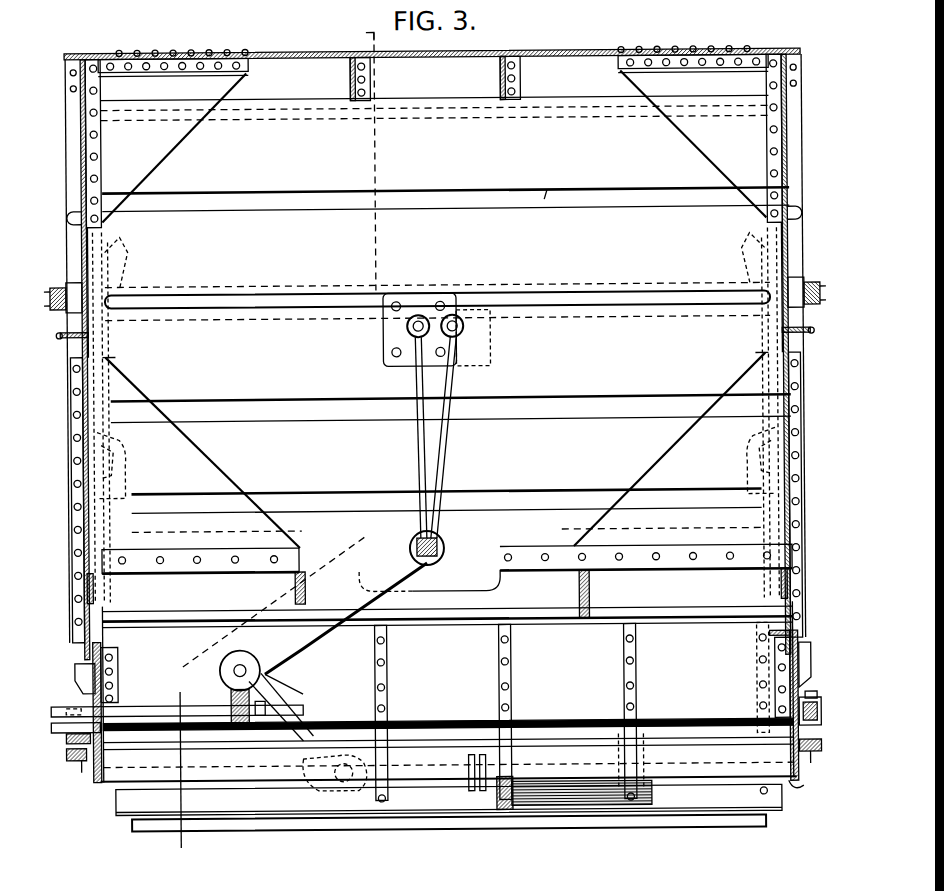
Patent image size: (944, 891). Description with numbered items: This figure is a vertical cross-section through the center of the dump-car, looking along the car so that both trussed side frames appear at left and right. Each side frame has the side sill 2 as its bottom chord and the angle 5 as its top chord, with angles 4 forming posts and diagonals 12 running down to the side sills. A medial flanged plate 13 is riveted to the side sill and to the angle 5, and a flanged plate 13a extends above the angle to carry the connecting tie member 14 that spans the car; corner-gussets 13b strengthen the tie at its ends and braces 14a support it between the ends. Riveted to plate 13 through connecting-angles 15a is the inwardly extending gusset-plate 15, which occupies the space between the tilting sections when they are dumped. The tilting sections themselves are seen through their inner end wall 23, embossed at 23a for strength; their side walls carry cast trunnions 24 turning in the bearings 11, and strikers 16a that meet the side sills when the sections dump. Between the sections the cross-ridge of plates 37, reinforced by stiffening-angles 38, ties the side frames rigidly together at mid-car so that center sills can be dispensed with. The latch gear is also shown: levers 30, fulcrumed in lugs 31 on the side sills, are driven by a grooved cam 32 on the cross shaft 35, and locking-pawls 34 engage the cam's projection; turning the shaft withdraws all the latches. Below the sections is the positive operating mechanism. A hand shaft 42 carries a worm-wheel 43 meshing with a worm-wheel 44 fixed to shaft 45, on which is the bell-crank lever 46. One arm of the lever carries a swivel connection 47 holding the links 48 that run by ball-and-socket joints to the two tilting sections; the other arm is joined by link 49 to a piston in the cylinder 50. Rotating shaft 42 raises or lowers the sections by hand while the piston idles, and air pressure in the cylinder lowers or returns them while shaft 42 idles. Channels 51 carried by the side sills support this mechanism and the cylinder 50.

The side sill 2 is at (86, 782).
The angle 4 is at (273, 447).
The angle 5 is at (64, 333).
The bearing 11 is at (86, 283).
The diagonal 12 is at (80, 672).
The medial flanged plate 13 is at (86, 584).
The flanged plate 13a is at (808, 132).
The corner-gusset 13b is at (433, 133).
The connecting tie member 14 is at (562, 51).
The brace 14a is at (372, 80).
The gusset-plate 15 is at (435, 450).
The connecting-angle 15a is at (813, 485).
The striker 16a is at (812, 452).
The inner end wall 23 is at (444, 153).
The embossment 23a is at (495, 495).
The trunnion 24 is at (768, 295).
The lever 30 is at (74, 760).
The lug 31 is at (68, 778).
The cam 32 is at (64, 738).
The locking-pawl 34 is at (62, 724).
The shaft 35 is at (411, 720).
The plate 37 is at (448, 716).
The stiffening-angle 38 is at (116, 676).
The shaft 42 is at (158, 714).
The worm-wheel 43 is at (246, 700).
The worm-wheel 44 is at (265, 674).
The shaft 45 is at (230, 670).
The bell-crank lever 46 is at (300, 712).
The swivel connection 47 is at (440, 544).
The link 48 is at (422, 402).
The link 49 is at (320, 792).
The cylinder 50 is at (572, 798).
The channel 51 is at (448, 772).